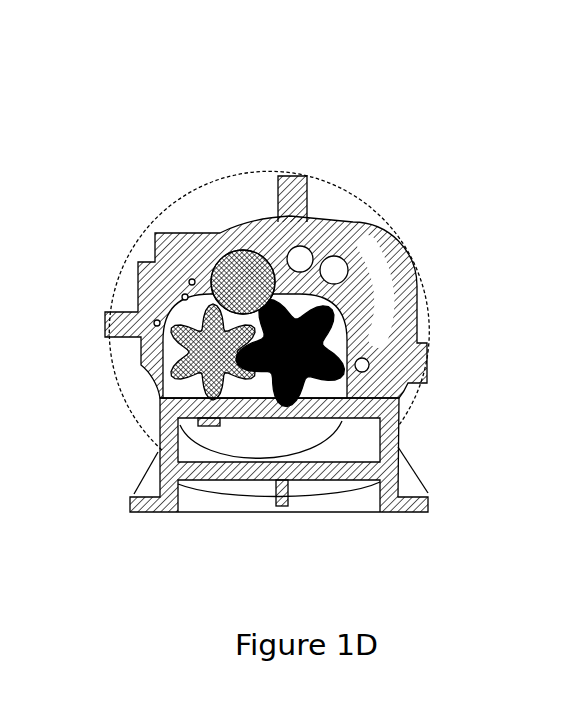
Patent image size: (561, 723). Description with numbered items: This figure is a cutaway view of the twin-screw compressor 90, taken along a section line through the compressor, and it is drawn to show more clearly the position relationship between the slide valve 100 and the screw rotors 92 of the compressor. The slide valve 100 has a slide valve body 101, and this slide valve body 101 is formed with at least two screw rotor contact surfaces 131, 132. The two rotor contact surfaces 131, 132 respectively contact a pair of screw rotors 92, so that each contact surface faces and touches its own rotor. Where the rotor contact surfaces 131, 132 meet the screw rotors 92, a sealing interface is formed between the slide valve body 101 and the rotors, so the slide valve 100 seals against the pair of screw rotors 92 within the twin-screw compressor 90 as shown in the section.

The twin-screw compressor 90 is at (118, 130).
The screw rotors 92 is at (155, 388).
The slide valve 100 is at (307, 217).
The slide valve body 101 is at (244, 248).
The screw rotor contact surface 131 is at (328, 226).
The screw rotor contact surface 132 is at (207, 273).